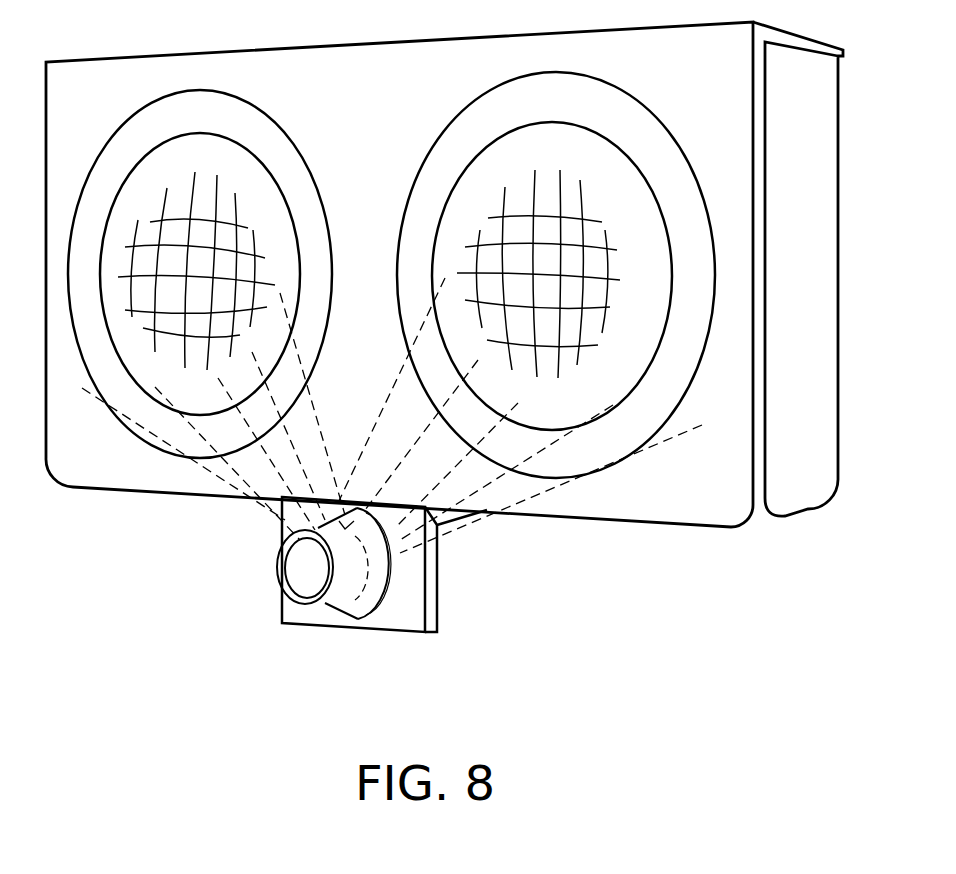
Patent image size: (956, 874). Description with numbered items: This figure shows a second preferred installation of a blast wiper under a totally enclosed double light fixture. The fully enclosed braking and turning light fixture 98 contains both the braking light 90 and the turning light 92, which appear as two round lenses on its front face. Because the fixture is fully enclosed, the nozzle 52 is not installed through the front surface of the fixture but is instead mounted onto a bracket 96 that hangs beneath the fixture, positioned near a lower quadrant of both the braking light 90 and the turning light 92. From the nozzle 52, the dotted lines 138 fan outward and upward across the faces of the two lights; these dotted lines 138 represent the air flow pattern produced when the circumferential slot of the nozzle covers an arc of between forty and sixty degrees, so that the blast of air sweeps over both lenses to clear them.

The nozzle 52 is at (305, 568).
The braking light 90 is at (300, 146).
The turning light 92 is at (658, 118).
The bracket 96 is at (438, 578).
The fully enclosed braking and turning light fixture 98 is at (808, 232).
The dotted lines 138 is at (222, 485).